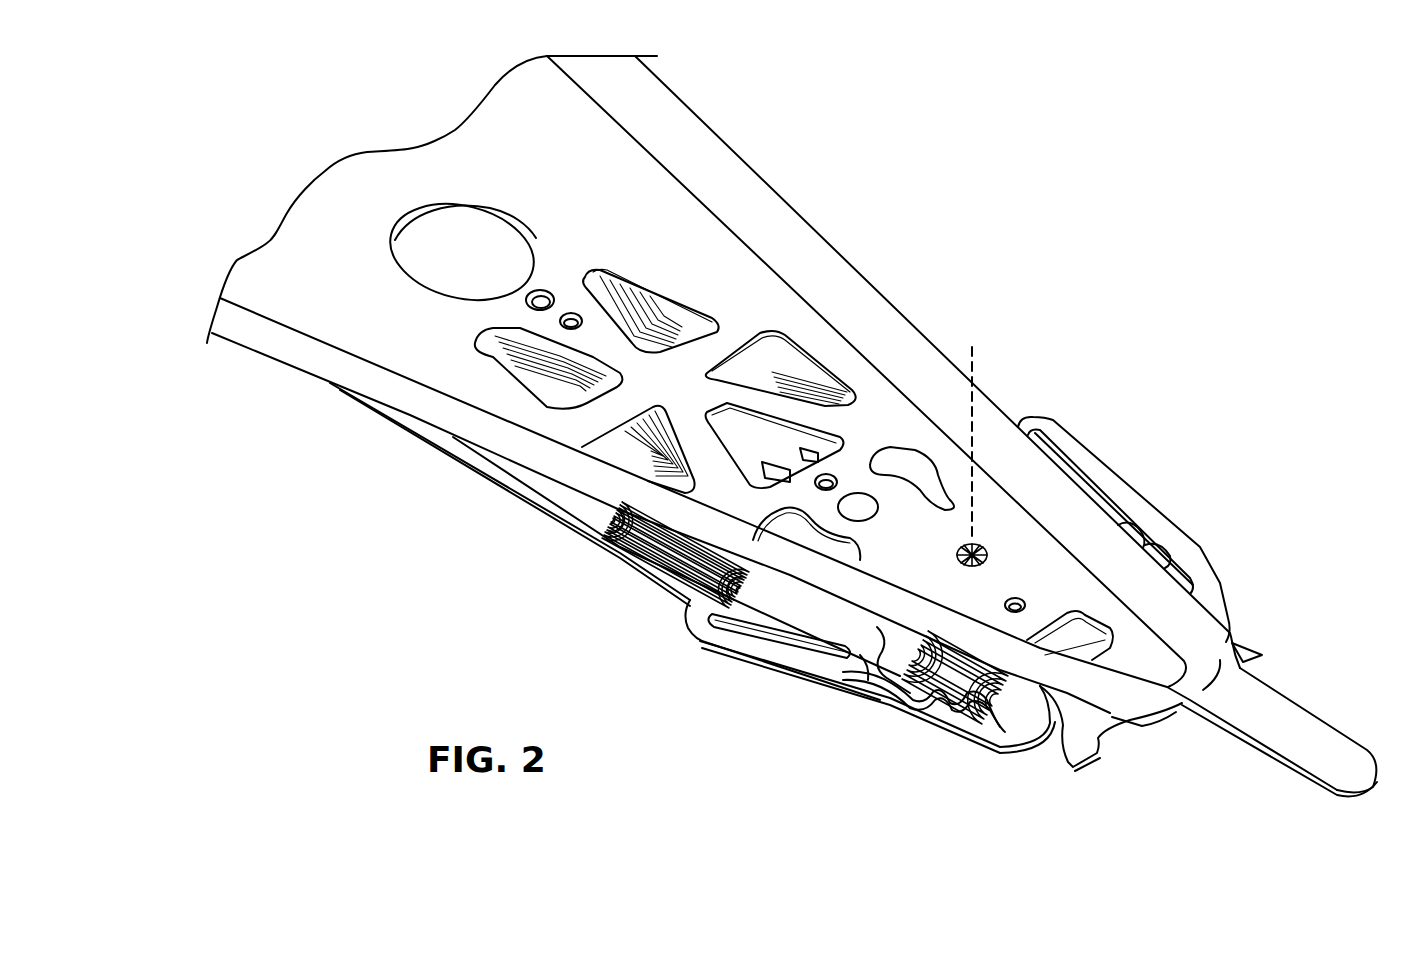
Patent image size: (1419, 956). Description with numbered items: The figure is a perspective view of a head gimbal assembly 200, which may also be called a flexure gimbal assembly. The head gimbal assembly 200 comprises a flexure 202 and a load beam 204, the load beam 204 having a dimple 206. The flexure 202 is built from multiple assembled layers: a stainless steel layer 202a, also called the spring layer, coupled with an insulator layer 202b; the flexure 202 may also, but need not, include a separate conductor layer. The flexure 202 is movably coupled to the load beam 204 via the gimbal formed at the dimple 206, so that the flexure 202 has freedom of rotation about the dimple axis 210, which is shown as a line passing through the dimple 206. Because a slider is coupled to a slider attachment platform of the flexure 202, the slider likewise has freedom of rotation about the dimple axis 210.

The head gimbal assembly 200 is at (1060, 184).
The flexure 202 is at (1125, 489).
The stainless steel layer 202a is at (777, 660).
The insulator layer 202b is at (653, 557).
The load beam 204 is at (783, 239).
The dimple 206 is at (990, 550).
The dimple axis 210 is at (972, 367).